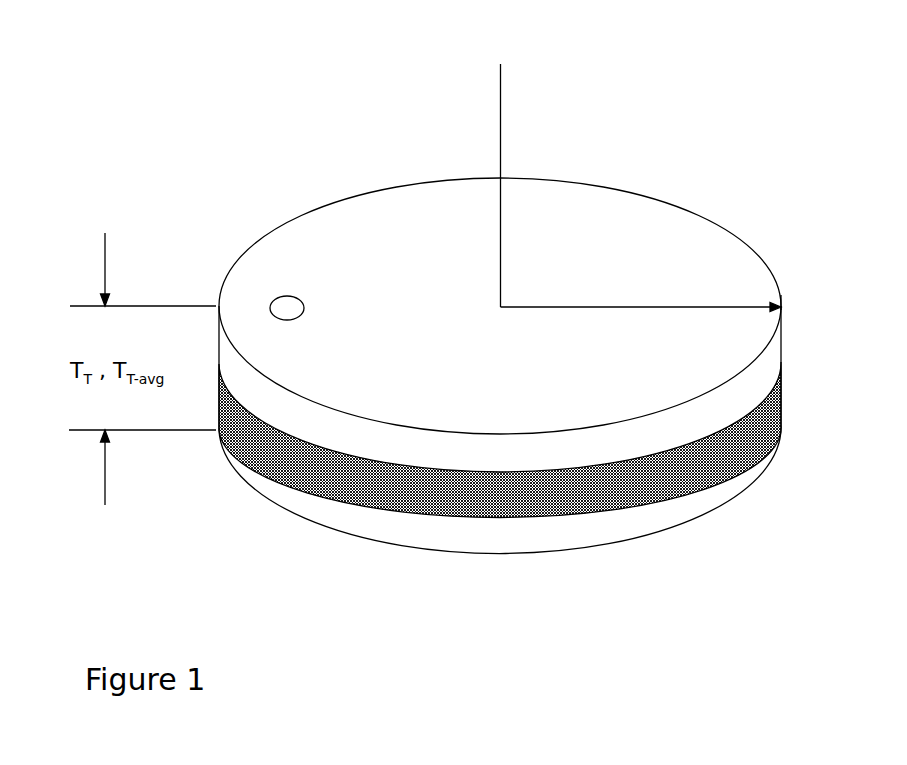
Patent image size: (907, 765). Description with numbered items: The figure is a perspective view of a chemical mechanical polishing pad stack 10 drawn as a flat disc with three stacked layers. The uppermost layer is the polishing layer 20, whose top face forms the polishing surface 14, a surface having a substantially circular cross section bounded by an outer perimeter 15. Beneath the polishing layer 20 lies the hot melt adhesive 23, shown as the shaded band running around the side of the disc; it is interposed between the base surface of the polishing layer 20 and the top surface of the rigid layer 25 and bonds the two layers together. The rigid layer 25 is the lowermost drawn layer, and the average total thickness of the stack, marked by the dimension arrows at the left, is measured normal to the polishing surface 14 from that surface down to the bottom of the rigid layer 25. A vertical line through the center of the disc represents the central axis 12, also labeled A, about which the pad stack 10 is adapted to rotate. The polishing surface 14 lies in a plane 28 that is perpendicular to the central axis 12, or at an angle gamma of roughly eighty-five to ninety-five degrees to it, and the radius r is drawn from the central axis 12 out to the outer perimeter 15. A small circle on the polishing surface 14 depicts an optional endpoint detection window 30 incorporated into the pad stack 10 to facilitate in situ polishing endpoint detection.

The chemical mechanical polishing pad stack 10 is at (537, 320).
The central axis 12 is at (504, 116).
The polishing surface 14 is at (347, 237).
The outer perimeter 15 is at (782, 297).
The polishing layer 20 is at (508, 452).
The hot melt adhesive 23 is at (672, 477).
The rigid layer 25 is at (385, 522).
The plane 28 is at (428, 207).
The endpoint detection window 30 is at (288, 305).